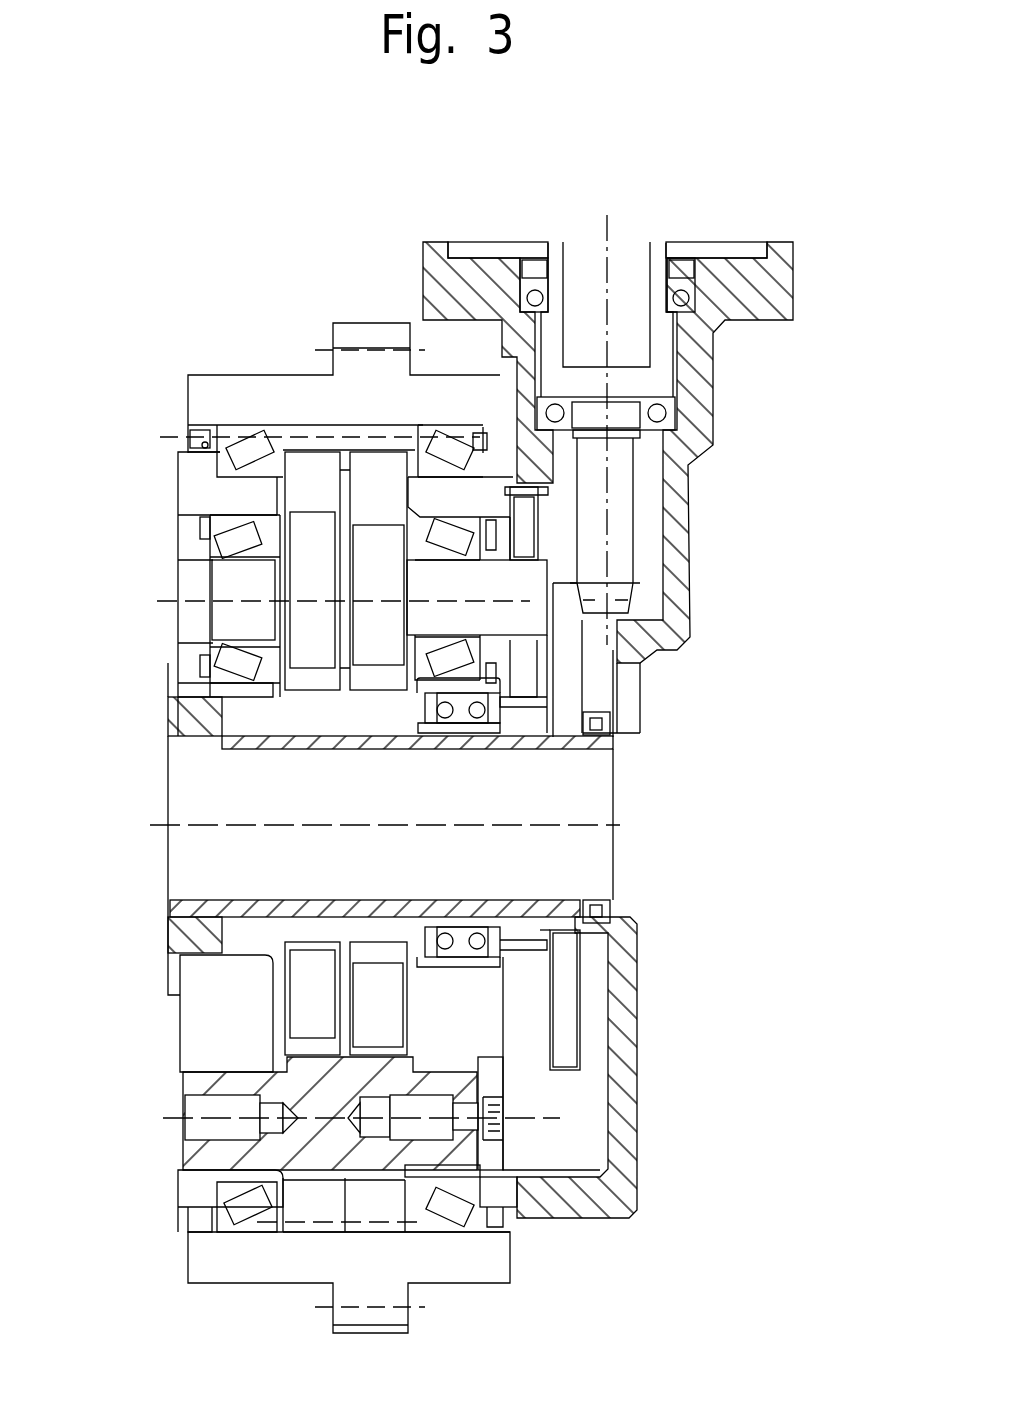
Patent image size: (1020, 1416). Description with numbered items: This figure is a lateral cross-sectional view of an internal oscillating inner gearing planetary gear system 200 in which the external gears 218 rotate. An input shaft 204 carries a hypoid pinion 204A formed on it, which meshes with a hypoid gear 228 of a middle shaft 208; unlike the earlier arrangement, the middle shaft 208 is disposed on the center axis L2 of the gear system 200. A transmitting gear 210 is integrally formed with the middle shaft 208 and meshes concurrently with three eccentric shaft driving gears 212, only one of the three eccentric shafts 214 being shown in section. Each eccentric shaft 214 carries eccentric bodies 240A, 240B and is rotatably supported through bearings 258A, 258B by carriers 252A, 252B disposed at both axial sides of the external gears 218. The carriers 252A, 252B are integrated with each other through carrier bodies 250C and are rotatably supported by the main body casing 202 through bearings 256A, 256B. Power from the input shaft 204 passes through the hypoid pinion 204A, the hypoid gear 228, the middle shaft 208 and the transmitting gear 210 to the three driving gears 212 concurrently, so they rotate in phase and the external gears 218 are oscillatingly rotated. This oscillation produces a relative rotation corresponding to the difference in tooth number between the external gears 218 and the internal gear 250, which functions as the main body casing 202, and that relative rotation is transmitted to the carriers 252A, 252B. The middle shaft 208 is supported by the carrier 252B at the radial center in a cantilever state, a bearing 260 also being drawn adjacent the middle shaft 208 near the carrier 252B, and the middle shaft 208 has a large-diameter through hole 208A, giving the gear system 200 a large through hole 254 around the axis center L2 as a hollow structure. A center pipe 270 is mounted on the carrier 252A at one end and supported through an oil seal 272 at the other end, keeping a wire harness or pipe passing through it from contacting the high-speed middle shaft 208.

The gear system 200 is at (691, 208).
The main body casing 202 is at (277, 393).
The input shaft 204 is at (622, 473).
The hypoid pinion 204A is at (598, 597).
The middle shaft 208 is at (552, 727).
The through hole 208A is at (432, 748).
The transmitting gear 210 is at (543, 750).
The eccentric shaft driving gear 212 is at (527, 532).
The eccentric shaft 214 is at (225, 620).
The external gear 218 is at (365, 470).
The hypoid gear 228 is at (582, 1052).
The eccentric body 240A is at (240, 583).
The eccentric body 240B is at (380, 557).
The internal gear 250 is at (397, 422).
The carrier body 250C is at (437, 1083).
The carrier 252A is at (205, 490).
The carrier 252B is at (547, 512).
The through hole 254 is at (228, 752).
The bearing 256A is at (237, 430).
The bearing 256B is at (443, 450).
The bearing 258A is at (205, 545).
The bearing 258B is at (443, 548).
The ball bearing 260 is at (478, 725).
The center pipe 270 is at (182, 912).
The oil seal 272 is at (607, 726).
The center axis L2 is at (484, 830).